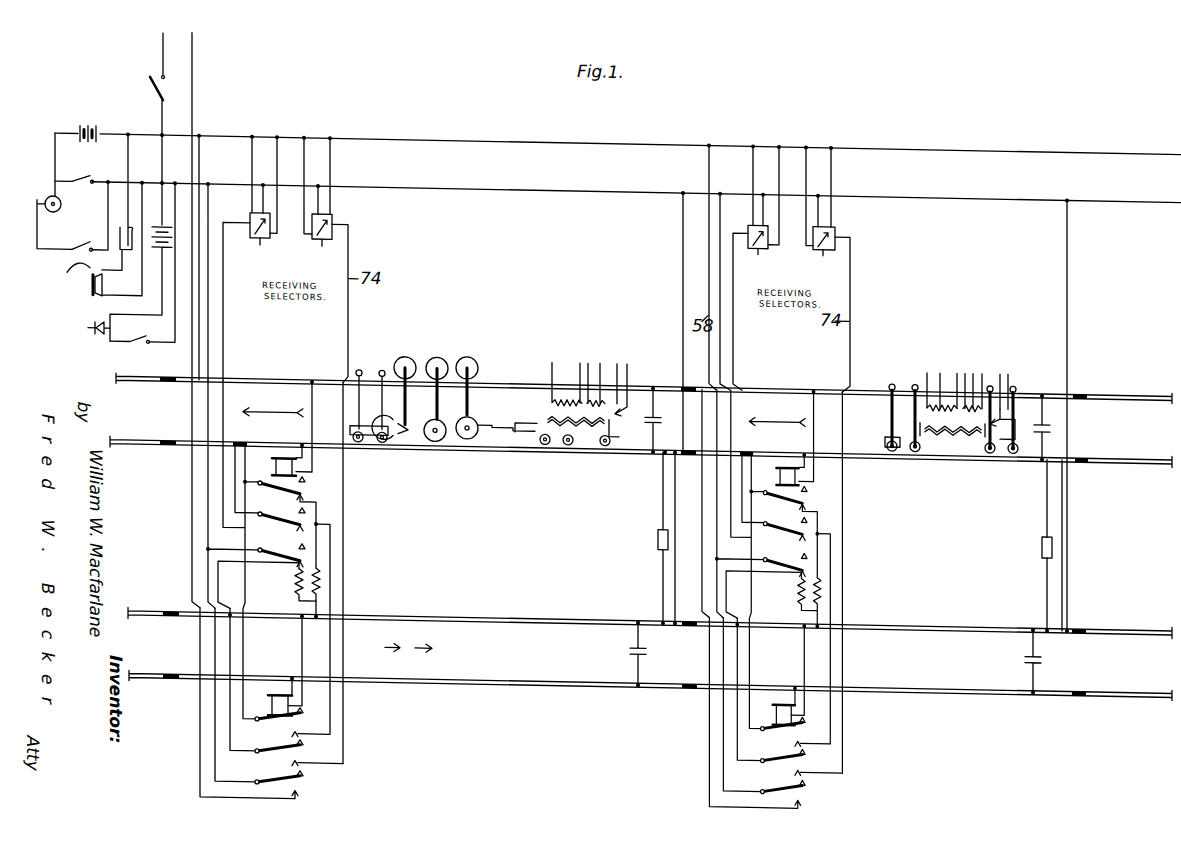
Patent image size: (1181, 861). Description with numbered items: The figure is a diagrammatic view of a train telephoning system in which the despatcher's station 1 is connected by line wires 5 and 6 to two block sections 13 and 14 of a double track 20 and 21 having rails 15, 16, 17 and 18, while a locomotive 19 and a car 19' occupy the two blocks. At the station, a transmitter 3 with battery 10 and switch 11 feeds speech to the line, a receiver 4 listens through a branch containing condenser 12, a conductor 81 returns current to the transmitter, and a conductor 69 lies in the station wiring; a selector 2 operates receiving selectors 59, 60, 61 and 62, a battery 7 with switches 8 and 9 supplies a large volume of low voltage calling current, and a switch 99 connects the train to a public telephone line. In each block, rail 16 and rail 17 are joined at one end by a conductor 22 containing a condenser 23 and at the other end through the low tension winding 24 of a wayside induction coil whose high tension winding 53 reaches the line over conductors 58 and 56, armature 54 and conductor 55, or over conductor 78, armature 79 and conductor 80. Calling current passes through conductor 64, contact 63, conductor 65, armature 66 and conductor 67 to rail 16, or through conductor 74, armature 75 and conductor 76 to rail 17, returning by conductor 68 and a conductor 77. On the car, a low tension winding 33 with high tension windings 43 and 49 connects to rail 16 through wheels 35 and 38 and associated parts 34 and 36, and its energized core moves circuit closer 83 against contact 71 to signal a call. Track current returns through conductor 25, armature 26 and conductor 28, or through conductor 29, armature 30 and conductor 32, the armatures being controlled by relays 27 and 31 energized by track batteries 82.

The despatcher's station 1 is at (37, 273).
The selector 2 is at (62, 206).
The transmitter 3 is at (86, 326).
The receiver 4 is at (90, 290).
The line wire 5 is at (238, 131).
The line wire 6 is at (238, 179).
The battery 7 is at (90, 124).
The switch 8 is at (76, 244).
The switch 9 is at (80, 183).
The battery 10 is at (172, 226).
The switch 11 is at (138, 341).
The condenser 12 is at (133, 197).
The block section 13 is at (322, 590).
The block section 14 is at (802, 600).
The rail 15 is at (502, 374).
The rail 16 is at (493, 446).
The rail 17 is at (503, 609).
The rail 18 is at (498, 671).
The locomotive 19 is at (494, 416).
The car 19' is at (962, 416).
The track 20 is at (287, 412).
The track 21 is at (474, 645).
The conductor 22 is at (663, 476).
The condenser 23 is at (658, 530).
The low tension winding 24 is at (320, 578).
The conductor 25 is at (271, 456).
The armature 26 is at (304, 488).
The relay 27 is at (281, 452).
The conductor 28 is at (317, 515).
The conductor 29 is at (246, 628).
The armature 30 is at (278, 727).
The relay 31 is at (278, 688).
The conductor 32 is at (330, 656).
The low tension winding 33 is at (577, 432).
The contact shoe 34 is at (517, 412).
The wheel 35 is at (618, 440).
The link 36 is at (486, 416).
The wheel 38 is at (405, 432).
The high tension winding 43 is at (588, 360).
The high tension winding 49 is at (552, 360).
The high tension winding 53 is at (296, 580).
The armature 54 is at (281, 548).
The conductor 55 is at (208, 480).
The conductor 56 is at (256, 585).
The conductor 58 is at (192, 513).
The receiving selector 59 is at (261, 255).
The receiving selector 60 is at (320, 203).
The receiving selector 61 is at (756, 268).
The receiving selector 62 is at (820, 209).
The contact 63 is at (250, 212).
The conductor 64 is at (278, 150).
The conductor 65 is at (224, 318).
The armature 66 is at (281, 511).
The conductor 67 is at (235, 456).
The conductor 68 is at (682, 279).
The conductor 69 is at (56, 155).
The contact 71 is at (627, 360).
The conductor 74 is at (344, 714).
The armature 75 is at (298, 758).
The conductor 76 is at (230, 698).
The conductor 77 is at (1064, 478).
The conductor 78 is at (215, 717).
The armature 79 is at (301, 784).
The conductor 80 is at (200, 739).
The conductor 81 is at (177, 294).
The track battery 82 is at (655, 406).
The circuit closer 83 is at (624, 430).
The switch 99 is at (153, 82).